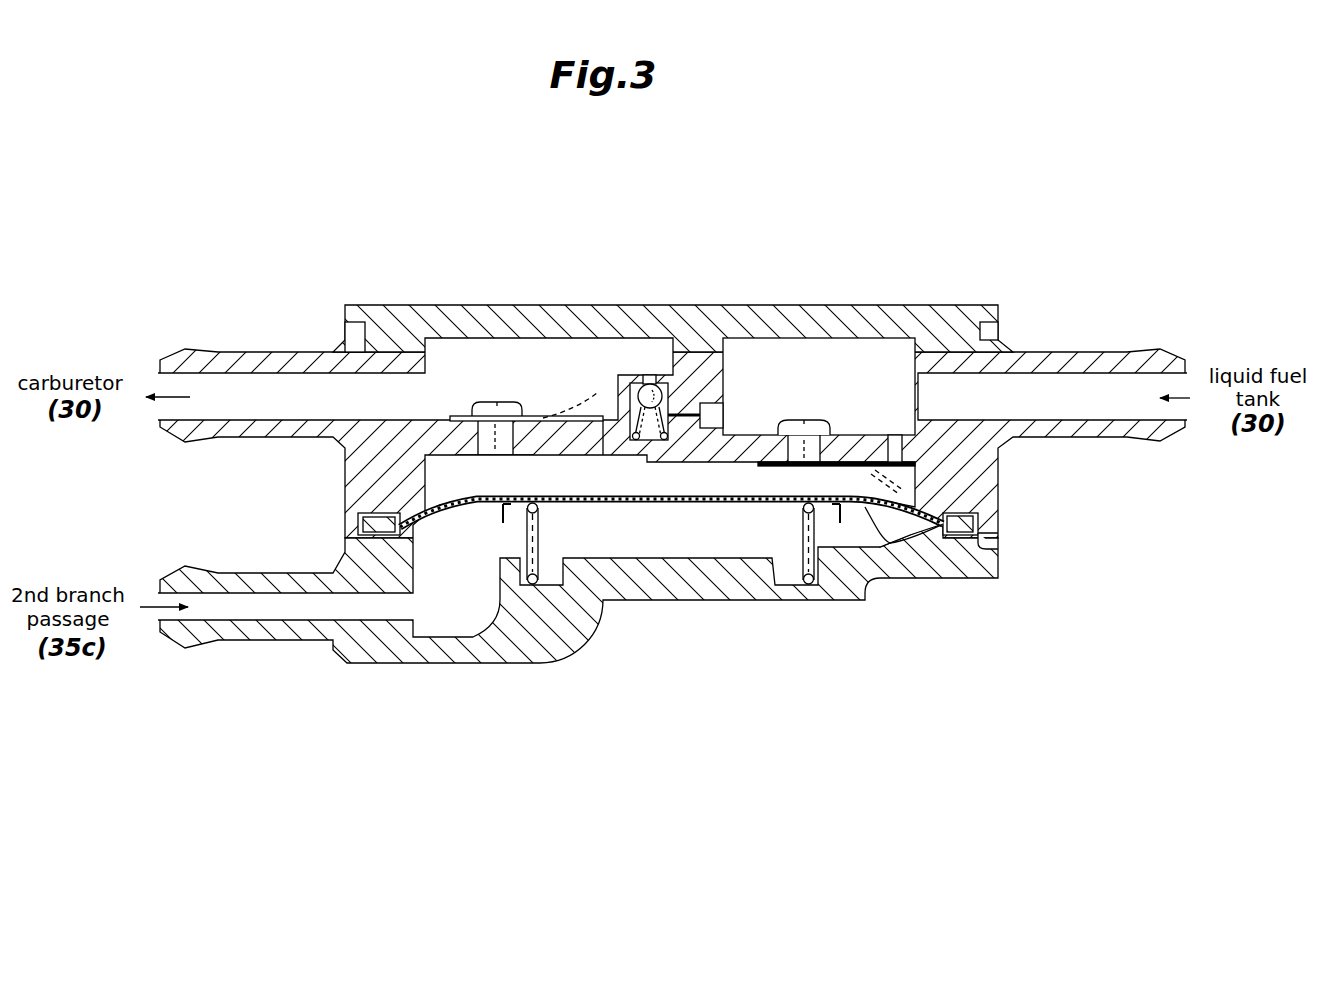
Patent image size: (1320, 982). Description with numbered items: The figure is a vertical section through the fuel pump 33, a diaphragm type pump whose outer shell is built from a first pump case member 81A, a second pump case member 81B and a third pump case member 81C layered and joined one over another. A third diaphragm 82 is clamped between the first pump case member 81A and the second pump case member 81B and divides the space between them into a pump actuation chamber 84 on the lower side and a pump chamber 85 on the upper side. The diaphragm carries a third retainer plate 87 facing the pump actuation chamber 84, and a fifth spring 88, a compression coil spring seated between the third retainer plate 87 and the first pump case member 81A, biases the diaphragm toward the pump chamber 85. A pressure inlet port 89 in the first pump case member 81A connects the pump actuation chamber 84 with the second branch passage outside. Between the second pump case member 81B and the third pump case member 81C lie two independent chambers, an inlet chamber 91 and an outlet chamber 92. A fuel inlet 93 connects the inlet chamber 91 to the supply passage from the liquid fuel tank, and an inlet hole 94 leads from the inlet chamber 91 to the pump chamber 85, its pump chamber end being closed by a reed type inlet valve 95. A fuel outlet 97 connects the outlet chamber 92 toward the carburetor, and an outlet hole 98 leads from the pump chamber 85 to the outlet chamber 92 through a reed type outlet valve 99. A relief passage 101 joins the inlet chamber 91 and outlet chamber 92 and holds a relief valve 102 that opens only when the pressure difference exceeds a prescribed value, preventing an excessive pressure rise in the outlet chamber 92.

The fuel pump 33 is at (224, 238).
The first pump case member 81A is at (975, 578).
The second pump case member 81B is at (994, 490).
The third pump case member 81C is at (845, 318).
The third diaphragm 82 is at (866, 507).
The pump actuation chamber 84 is at (447, 596).
The pump chamber 85 is at (662, 492).
The third retainer plate 87 is at (679, 505).
The fifth spring 88 is at (540, 540).
The pressure inlet port 89 is at (286, 626).
The inlet chamber 91 is at (808, 392).
The outlet chamber 92 is at (480, 391).
The fuel inlet 93 is at (1063, 374).
The inlet hole 94 is at (891, 446).
The inlet valve 95 is at (890, 513).
The fuel outlet 97 is at (290, 372).
The outlet hole 98 is at (560, 428).
The outlet valve 99 is at (540, 416).
The relief passage 101 is at (712, 412).
The relief valve 102 is at (632, 363).